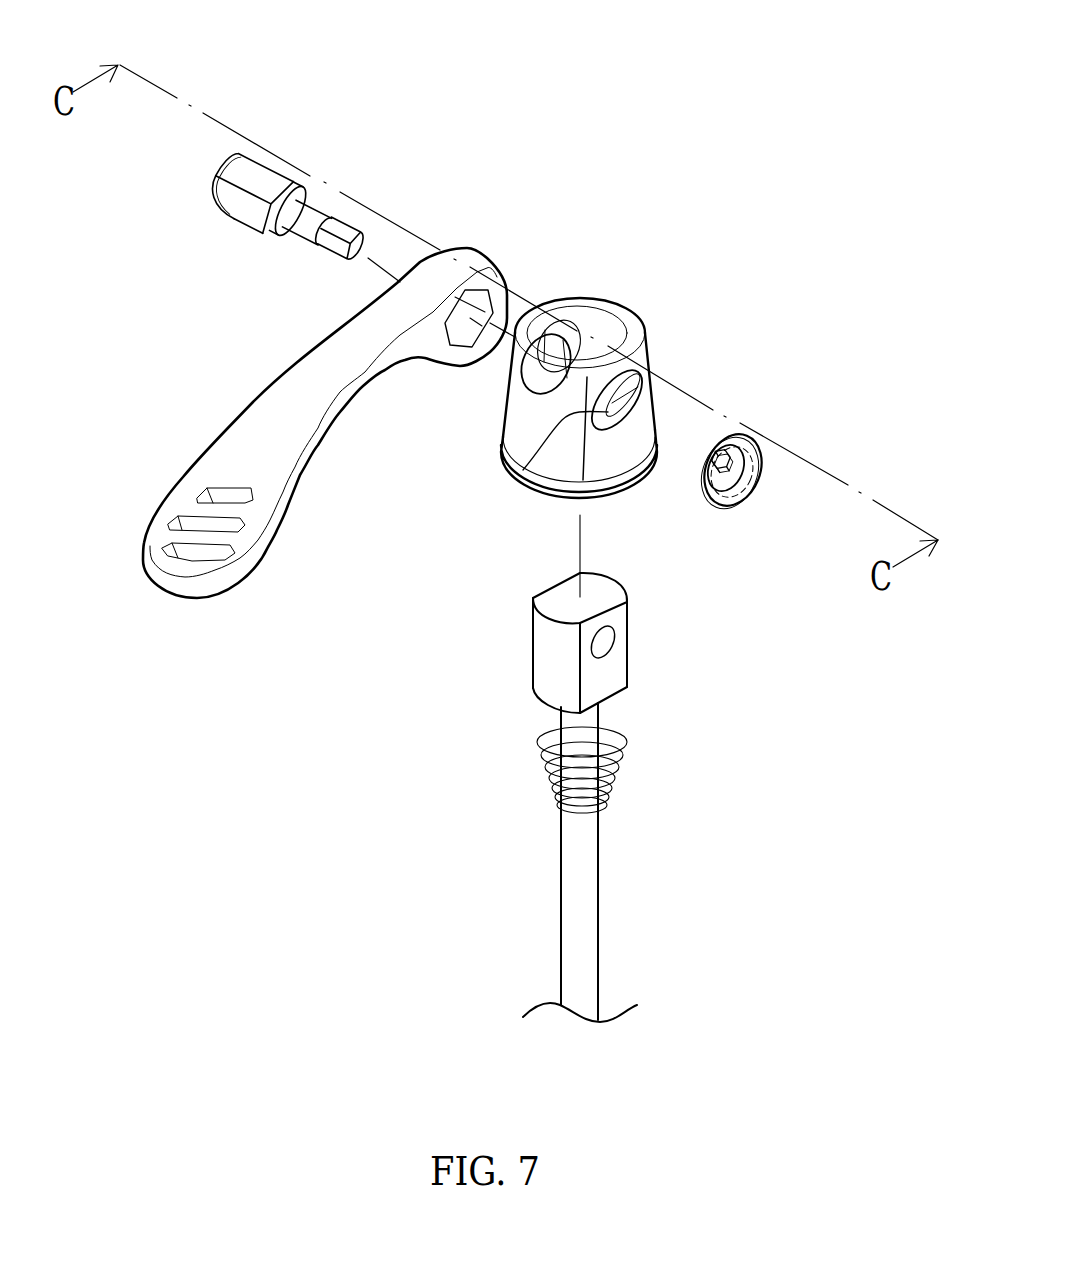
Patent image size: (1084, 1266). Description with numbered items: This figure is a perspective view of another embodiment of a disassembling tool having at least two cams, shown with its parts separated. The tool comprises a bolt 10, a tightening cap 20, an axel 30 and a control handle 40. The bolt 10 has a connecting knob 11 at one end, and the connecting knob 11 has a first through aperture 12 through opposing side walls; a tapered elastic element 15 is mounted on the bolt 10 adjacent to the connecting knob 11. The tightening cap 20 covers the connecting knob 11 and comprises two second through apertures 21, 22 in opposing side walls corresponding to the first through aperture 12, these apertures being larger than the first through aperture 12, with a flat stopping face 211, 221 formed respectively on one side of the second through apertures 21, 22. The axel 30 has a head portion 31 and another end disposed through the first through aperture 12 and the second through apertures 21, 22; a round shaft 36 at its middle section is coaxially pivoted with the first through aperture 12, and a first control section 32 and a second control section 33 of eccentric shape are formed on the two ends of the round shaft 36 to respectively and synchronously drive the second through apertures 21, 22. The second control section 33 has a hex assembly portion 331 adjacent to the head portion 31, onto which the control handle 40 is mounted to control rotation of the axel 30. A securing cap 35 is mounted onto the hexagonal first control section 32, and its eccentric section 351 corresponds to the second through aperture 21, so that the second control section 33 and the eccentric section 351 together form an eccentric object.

The bolt 10 is at (562, 940).
The connecting knob 11 is at (543, 648).
The first through aperture 12 is at (607, 640).
The elastic element 15 is at (615, 770).
The tightening cap 20 is at (639, 494).
The second through aperture 21 is at (523, 470).
The second through aperture 22 is at (535, 308).
The flat stopping face 221 is at (607, 303).
The flat stopping face 211 is at (633, 384).
The axel 30 is at (306, 160).
The head portion 31 is at (218, 158).
The hex assembly portion 331 is at (247, 210).
The second control section 33 is at (268, 230).
The round shaft 36 is at (318, 207).
The first control section 32 is at (352, 236).
The securing cap 35 is at (746, 489).
The eccentric section 351 is at (722, 440).
The control handle 40 is at (257, 393).